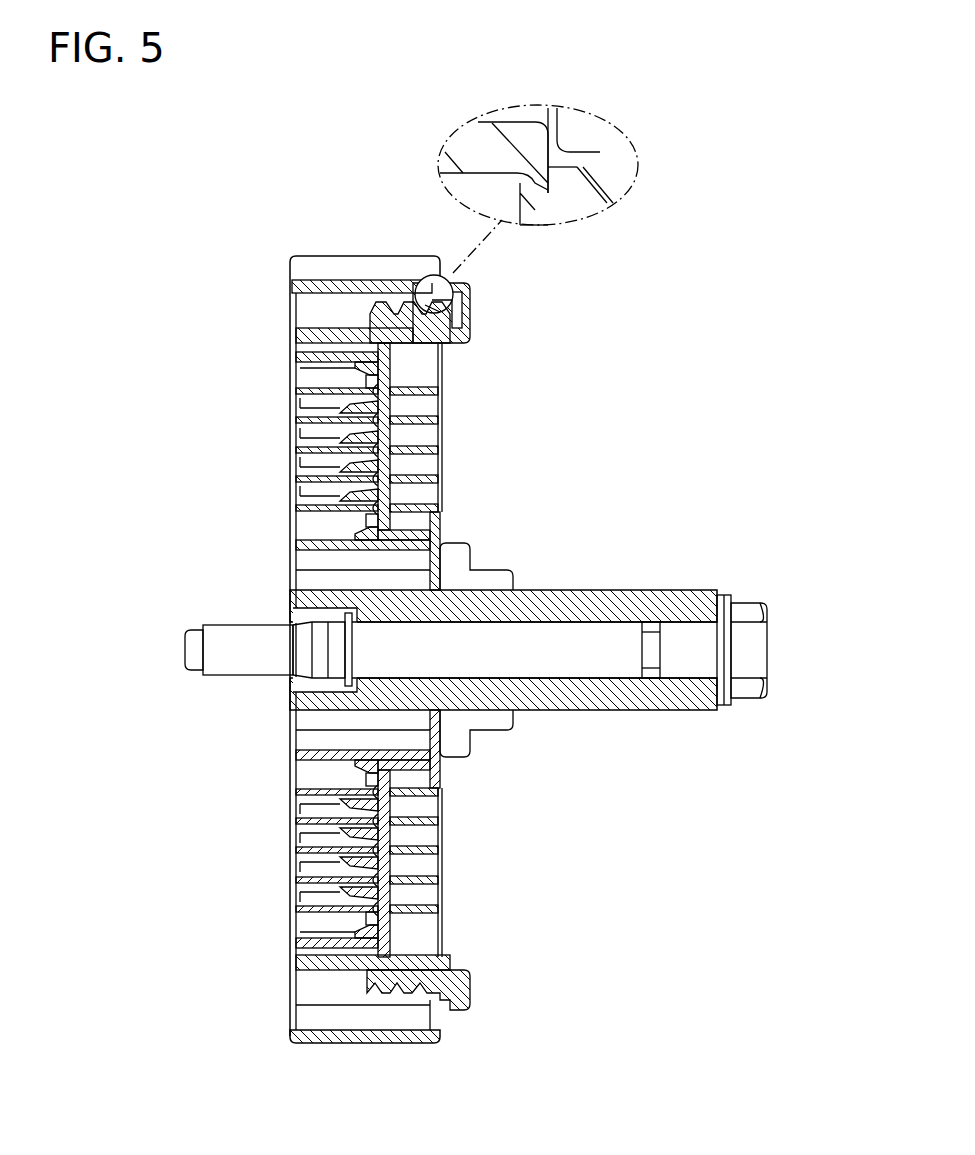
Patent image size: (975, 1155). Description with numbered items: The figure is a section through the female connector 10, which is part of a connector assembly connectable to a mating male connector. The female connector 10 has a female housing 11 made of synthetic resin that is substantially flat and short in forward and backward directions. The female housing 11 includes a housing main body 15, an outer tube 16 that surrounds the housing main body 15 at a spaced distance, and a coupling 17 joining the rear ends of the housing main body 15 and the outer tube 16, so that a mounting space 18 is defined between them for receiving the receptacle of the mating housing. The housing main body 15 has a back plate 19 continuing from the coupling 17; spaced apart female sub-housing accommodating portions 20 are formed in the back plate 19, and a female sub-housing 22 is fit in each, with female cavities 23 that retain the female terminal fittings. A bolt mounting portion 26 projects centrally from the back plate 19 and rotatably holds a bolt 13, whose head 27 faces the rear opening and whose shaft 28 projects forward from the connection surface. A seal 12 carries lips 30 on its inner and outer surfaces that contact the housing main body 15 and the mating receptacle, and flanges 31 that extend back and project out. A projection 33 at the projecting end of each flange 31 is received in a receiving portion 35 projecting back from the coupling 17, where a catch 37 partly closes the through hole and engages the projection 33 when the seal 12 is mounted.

The female connector 10 is at (355, 196).
The female housing 11 is at (326, 256).
The seal 12 is at (608, 204).
The bolt 13 is at (617, 635).
The housing main body 15 is at (333, 968).
The outer tube 16 is at (383, 1043).
The coupling 17 is at (440, 1020).
The mounting space 18 is at (300, 989).
The back plate 19 is at (445, 548).
The female sub-housing accommodating portion 20 is at (443, 790).
The female sub-housing 22 is at (300, 790).
The female cavity 23 is at (440, 428).
The bolt mounting portion 26 is at (568, 597).
The head 27 is at (750, 606).
The shaft 28 is at (222, 637).
The lips 30 is at (406, 318).
The flange 31 is at (545, 222).
The projection 33 is at (582, 173).
The receiving portion 35 is at (472, 333).
The catch 37 is at (530, 187).